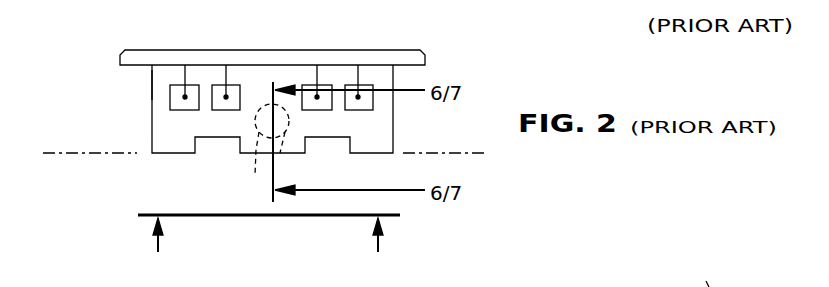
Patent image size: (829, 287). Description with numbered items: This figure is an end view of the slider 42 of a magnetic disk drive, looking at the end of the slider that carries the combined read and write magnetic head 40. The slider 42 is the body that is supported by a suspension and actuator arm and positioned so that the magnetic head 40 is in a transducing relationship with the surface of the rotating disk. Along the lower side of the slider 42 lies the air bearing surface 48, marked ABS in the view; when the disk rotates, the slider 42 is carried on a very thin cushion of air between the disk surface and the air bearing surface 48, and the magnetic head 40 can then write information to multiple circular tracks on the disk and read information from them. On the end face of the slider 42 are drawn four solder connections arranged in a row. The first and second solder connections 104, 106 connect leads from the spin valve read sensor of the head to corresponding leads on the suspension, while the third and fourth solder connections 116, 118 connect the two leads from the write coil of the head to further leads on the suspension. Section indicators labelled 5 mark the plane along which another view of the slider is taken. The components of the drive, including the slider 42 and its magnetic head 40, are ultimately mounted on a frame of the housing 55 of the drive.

The magnetic head 40 is at (254, 182).
The slider 42 is at (152, 98).
The air bearing surface (ABS) 48 is at (70, 155).
The first solder connection 104 is at (172, 90).
The third solder connection 116 is at (212, 88).
The fourth solder connection 118 is at (330, 83).
The second solder connection 106 is at (372, 83).
The section line 5- 5 is at (269, 249).
The housing 55 is at (705, 275).